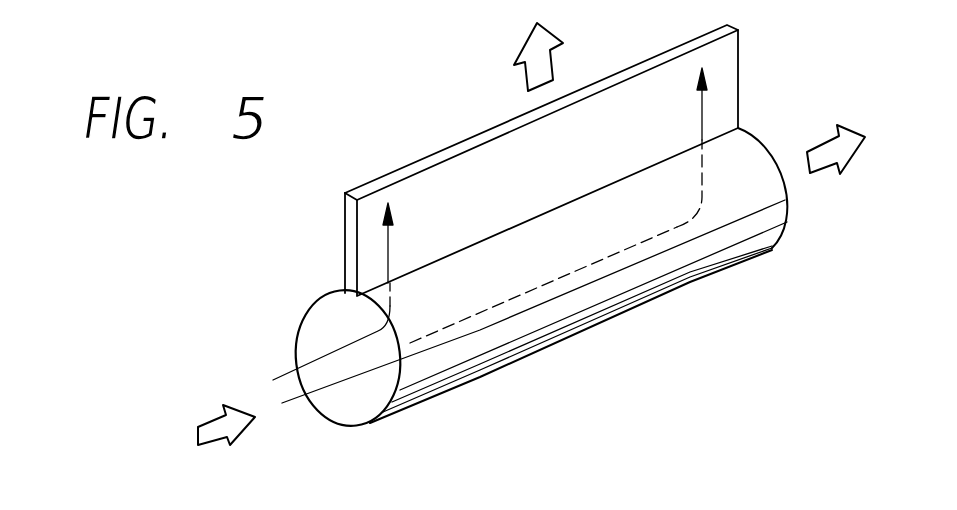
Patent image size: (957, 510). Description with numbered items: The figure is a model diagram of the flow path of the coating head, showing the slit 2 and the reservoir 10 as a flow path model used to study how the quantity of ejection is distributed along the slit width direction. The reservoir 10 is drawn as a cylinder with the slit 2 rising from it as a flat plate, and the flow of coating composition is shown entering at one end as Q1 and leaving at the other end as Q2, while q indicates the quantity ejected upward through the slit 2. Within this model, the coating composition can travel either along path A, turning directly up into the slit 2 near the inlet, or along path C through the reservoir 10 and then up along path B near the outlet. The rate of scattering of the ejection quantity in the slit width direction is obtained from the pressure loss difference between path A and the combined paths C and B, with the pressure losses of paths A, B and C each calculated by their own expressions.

The slit 2 is at (468, 180).
The reservoir 10 is at (726, 252).
The path A is at (344, 291).
The path B is at (692, 147).
The path C is at (543, 282).
The heat flow q is at (542, 45).
The inlet flow Q1 is at (224, 408).
The outlet flow Q2 is at (840, 134).